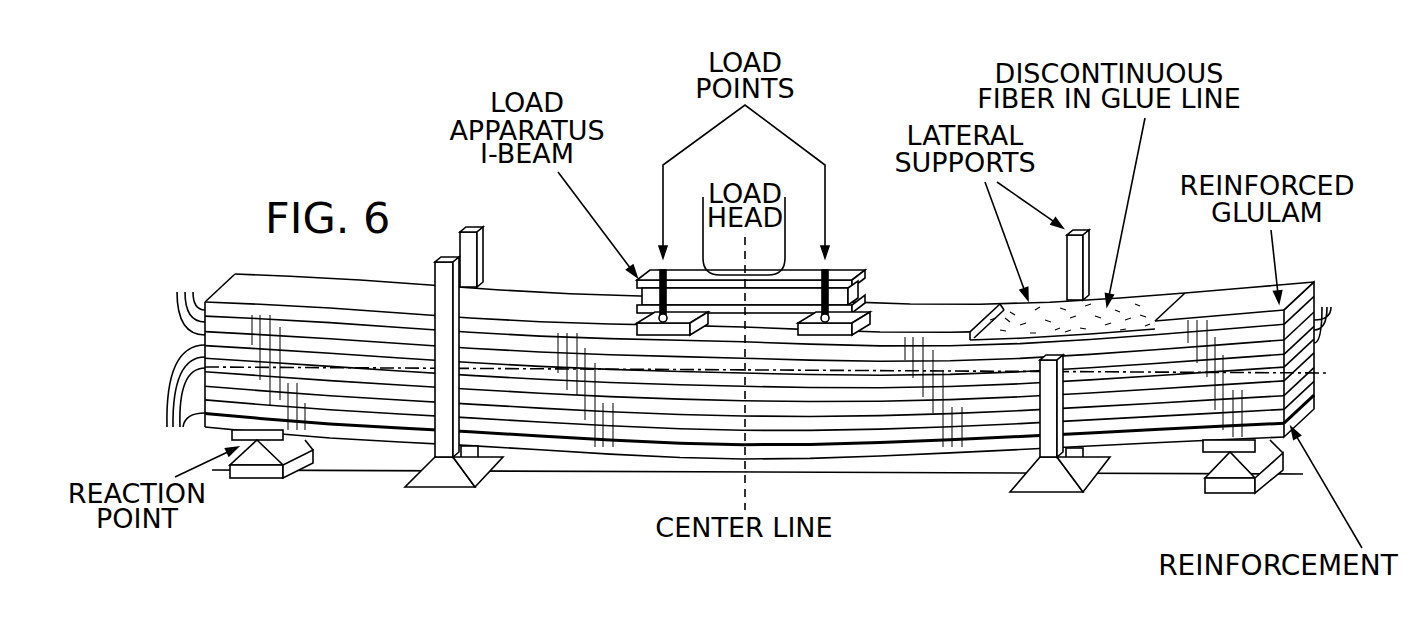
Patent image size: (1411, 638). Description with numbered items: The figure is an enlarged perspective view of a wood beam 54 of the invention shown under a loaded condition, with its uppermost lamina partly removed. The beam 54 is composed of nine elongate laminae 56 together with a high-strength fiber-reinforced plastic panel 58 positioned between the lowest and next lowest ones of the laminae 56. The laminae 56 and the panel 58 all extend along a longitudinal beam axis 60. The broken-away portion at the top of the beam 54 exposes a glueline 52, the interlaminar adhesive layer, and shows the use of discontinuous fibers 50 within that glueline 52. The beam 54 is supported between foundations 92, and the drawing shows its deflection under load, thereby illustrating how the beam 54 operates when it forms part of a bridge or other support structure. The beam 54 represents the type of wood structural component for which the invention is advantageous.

The discontinuous fibers 50 is at (1128, 312).
The glueline 52 is at (752, 369).
The beam 54 is at (1217, 282).
The elongate laminae 56 is at (186, 301).
The high-strength fiber-reinforced plastic panel 58 is at (1314, 408).
The longitudinal beam axis 60 is at (1328, 370).
The foundations 92 is at (258, 474).